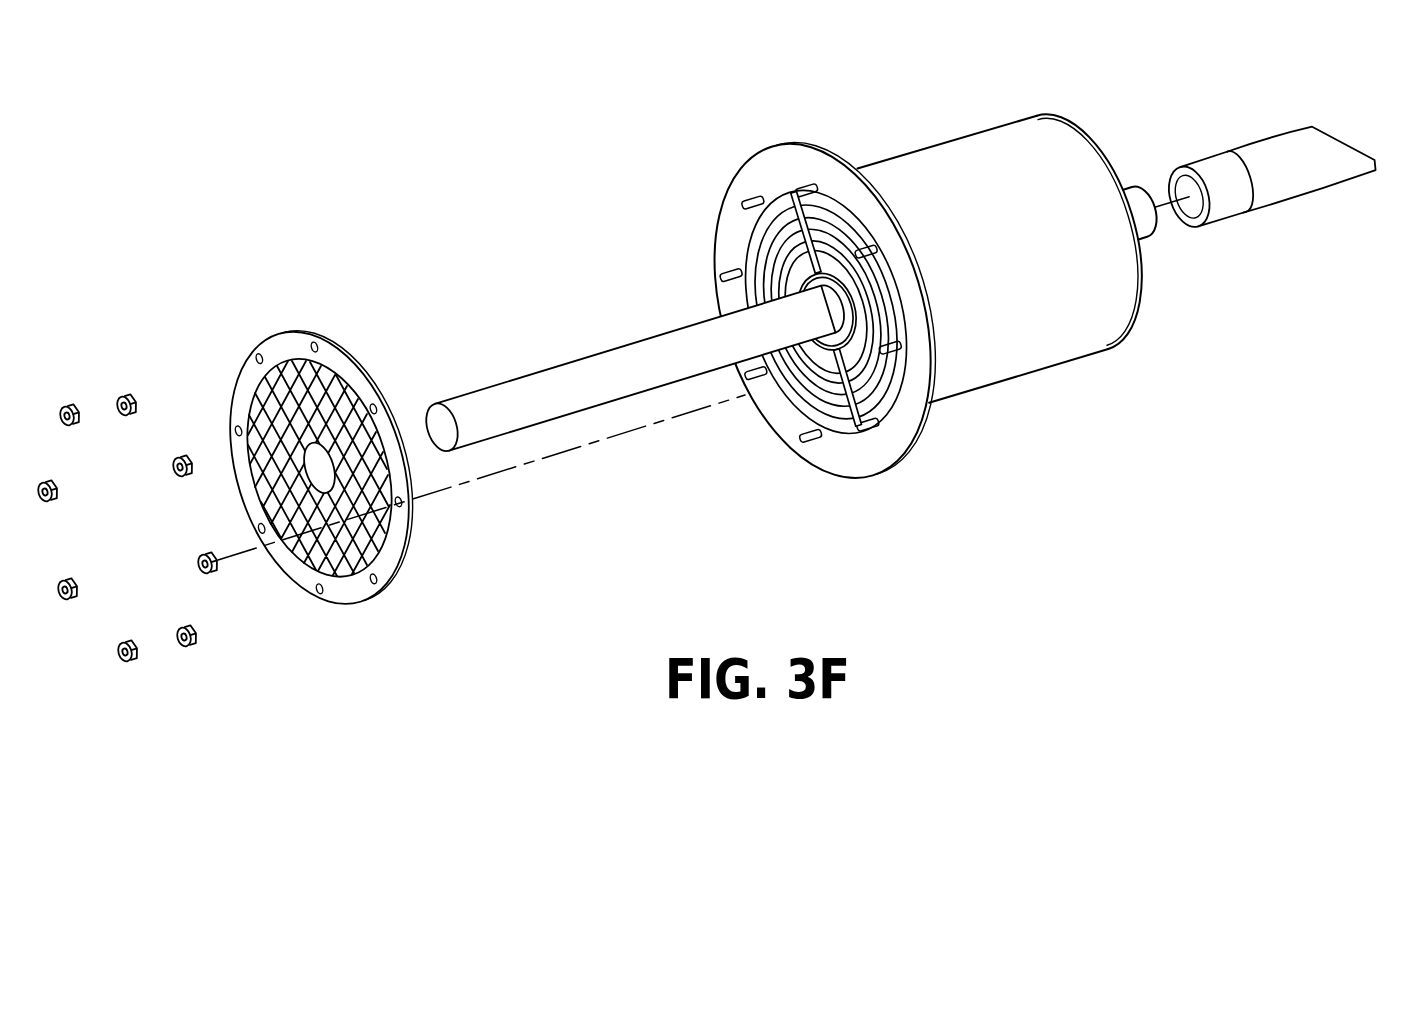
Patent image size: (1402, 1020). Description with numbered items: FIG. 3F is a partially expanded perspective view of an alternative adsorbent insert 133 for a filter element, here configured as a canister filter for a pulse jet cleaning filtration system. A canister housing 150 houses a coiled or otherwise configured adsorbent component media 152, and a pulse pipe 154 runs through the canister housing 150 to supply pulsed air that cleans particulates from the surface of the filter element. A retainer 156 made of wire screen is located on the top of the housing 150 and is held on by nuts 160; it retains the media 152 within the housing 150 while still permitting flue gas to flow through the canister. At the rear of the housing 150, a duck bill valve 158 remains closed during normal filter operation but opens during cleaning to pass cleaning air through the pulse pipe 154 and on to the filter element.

The insert 133 is at (658, 128).
The canister housing 150 is at (1017, 381).
The adsorbent component media 152 is at (881, 377).
The pulse pipe 154 is at (538, 374).
The retainer 156 is at (272, 389).
The duck bill valve 158 is at (1320, 182).
The nuts 160 is at (196, 647).